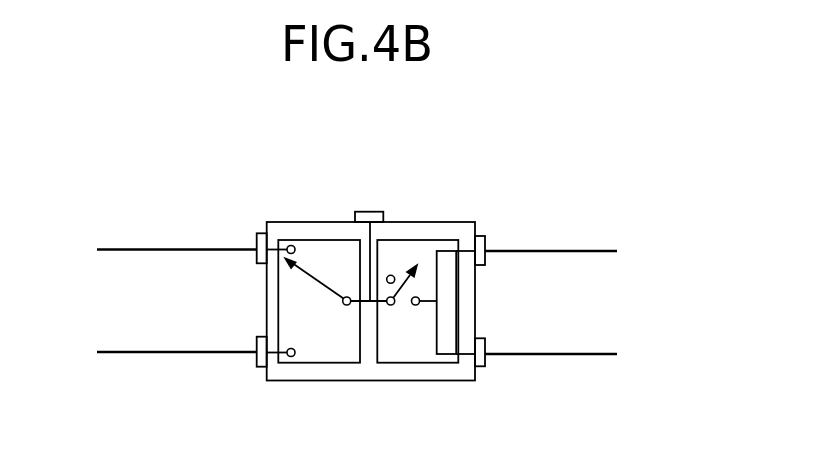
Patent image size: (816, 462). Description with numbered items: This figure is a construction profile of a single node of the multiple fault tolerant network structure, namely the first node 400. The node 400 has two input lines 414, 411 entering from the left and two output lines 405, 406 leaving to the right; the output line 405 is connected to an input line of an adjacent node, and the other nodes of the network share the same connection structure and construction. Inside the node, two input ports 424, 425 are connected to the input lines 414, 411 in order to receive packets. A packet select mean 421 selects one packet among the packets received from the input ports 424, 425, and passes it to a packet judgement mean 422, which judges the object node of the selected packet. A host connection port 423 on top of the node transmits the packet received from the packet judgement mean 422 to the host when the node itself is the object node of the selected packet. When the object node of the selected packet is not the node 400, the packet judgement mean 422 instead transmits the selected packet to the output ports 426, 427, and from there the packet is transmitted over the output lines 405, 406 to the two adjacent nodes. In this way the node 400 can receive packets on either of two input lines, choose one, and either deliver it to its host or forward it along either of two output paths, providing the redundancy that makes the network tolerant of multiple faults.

The node 1 400 is at (448, 222).
The output line 405 is at (583, 251).
The output line 406 is at (583, 354).
The input line 411 is at (168, 352).
The input line 414 is at (168, 250).
The packet select mean 421 is at (315, 363).
The packet judgement mean 422 is at (410, 363).
The host connection port 423 is at (370, 212).
The input port 424 is at (258, 237).
The input port 425 is at (257, 362).
The output port 426 is at (485, 240).
The output port 427 is at (485, 362).